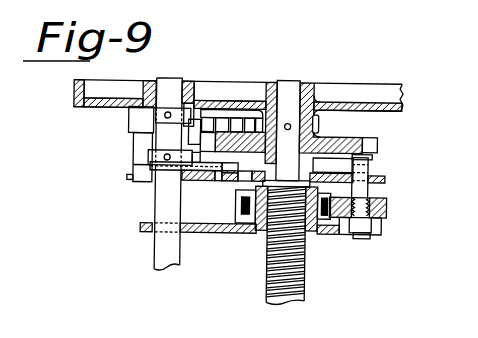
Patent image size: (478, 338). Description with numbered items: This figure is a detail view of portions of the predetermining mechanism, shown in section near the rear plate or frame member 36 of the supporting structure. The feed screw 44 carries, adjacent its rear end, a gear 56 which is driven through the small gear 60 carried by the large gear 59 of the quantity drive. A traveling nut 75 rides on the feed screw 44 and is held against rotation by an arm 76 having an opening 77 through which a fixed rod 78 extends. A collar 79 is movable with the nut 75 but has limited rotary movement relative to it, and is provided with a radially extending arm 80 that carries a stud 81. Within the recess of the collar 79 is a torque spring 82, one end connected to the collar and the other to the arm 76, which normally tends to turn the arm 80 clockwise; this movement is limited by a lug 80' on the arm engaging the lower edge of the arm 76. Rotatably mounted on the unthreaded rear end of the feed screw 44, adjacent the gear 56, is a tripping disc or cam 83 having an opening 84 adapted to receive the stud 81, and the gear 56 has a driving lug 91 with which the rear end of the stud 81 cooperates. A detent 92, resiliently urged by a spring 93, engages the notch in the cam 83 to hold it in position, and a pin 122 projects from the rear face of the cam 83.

The rear plate or frame member 36 is at (342, 102).
The feed screw 44 is at (268, 277).
The gear 56 is at (377, 138).
The large gear 59 is at (227, 124).
The small gear 60 is at (195, 131).
The traveling nut 75 is at (310, 238).
The arm 76 is at (217, 229).
The opening 77 is at (150, 232).
The fixed rod 78 is at (163, 258).
The collar 79 is at (242, 203).
The radially extending arm 80 is at (382, 215).
The lug 80' is at (357, 254).
The stud 81 is at (370, 188).
The torque spring 82 is at (333, 234).
The tripping disc or cam 83 is at (383, 178).
The opening 84 is at (373, 161).
The driving lug 91 is at (375, 156).
The detent 92 is at (185, 183).
The spring 93 is at (130, 177).
The pin 122 is at (226, 178).